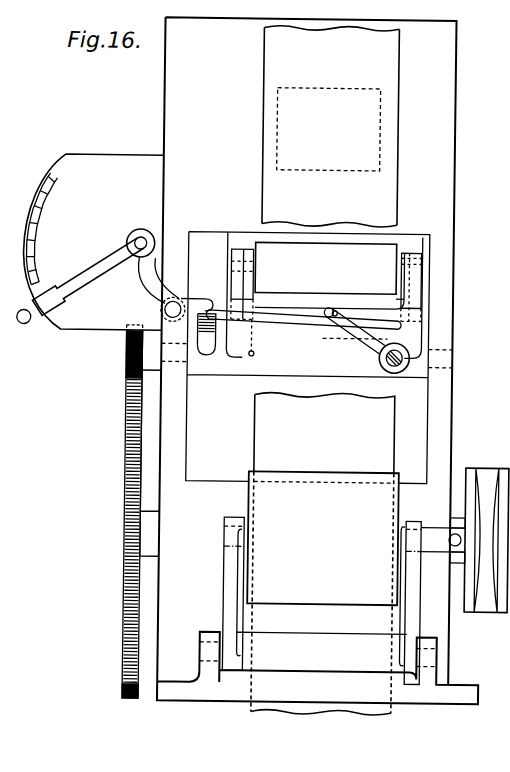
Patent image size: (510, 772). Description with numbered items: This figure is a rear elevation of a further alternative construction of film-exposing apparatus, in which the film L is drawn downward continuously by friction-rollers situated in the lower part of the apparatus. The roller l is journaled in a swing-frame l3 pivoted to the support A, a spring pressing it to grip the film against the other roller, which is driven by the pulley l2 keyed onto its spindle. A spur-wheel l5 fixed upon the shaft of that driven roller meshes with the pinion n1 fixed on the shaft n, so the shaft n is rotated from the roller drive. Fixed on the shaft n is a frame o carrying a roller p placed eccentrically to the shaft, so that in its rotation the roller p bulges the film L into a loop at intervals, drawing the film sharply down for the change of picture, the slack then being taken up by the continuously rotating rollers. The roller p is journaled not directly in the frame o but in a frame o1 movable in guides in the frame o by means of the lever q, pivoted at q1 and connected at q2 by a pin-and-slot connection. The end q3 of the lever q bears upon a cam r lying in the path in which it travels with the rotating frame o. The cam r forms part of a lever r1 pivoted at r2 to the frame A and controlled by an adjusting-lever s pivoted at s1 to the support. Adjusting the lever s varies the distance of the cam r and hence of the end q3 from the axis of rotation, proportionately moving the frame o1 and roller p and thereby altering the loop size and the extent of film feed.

The support A is at (252, 360).
The film L is at (331, 127).
The roller p is at (330, 275).
The frame o is at (228, 256).
The frame o1 is at (247, 252).
The shaft n is at (304, 340).
The pinion n1 is at (126, 360).
The lever q is at (353, 340).
The pivot q1 is at (395, 372).
The pin-and-slot connection q2 is at (329, 317).
The lever end q3 is at (206, 300).
The cam r is at (205, 356).
The lever r1 is at (158, 270).
The pivot r2 is at (163, 310).
The adjusting-lever s is at (93, 265).
The pivot s1 is at (140, 240).
The friction-roller l is at (323, 553).
The pulley l2 is at (476, 468).
The swing-frame l3 is at (226, 580).
The spur-wheel l5 is at (126, 459).